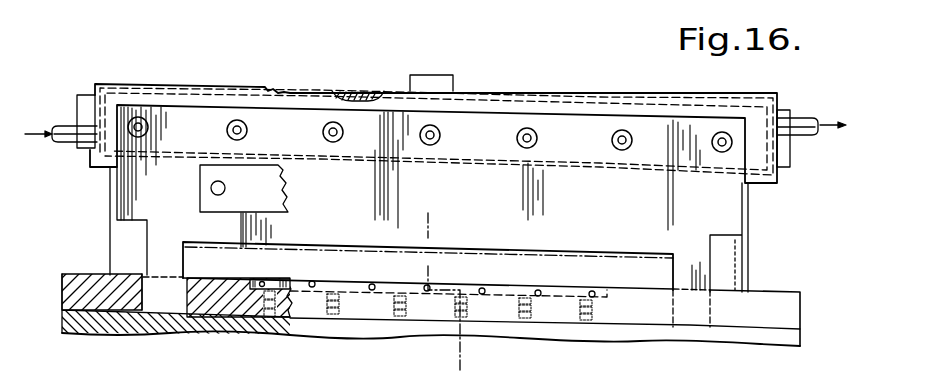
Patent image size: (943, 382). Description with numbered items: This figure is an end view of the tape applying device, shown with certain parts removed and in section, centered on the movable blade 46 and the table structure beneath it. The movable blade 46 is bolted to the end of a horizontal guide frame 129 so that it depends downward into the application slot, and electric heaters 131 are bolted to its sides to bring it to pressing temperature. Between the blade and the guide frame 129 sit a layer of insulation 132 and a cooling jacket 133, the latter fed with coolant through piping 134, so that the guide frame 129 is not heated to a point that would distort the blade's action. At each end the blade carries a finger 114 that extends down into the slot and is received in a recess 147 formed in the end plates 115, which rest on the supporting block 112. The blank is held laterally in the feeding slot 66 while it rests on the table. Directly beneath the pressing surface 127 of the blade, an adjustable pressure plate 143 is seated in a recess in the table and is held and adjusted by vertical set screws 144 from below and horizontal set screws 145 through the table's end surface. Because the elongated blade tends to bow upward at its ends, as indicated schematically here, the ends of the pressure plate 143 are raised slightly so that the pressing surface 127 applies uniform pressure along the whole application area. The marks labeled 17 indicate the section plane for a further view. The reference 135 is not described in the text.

The movable blade 46 is at (598, 210).
The feeding slot 66 is at (367, 310).
The supporting block 112 is at (80, 333).
The finger 114 is at (173, 267).
The end plate 115 is at (78, 274).
The pressing surface 127 is at (492, 253).
The guide frame 129 is at (82, 95).
The electric heater 131 is at (267, 193).
The layer of insulation 132 is at (190, 83).
The cooling jacket 133 is at (348, 90).
The piping 134 is at (63, 143).
The support column 135 is at (110, 205).
The pressure plate 143 is at (286, 270).
The vertical set screws 144 is at (258, 314).
The horizontal set screws 145 is at (375, 284).
The recess 147 is at (157, 297).
The section line 17- 17 is at (453, 225).